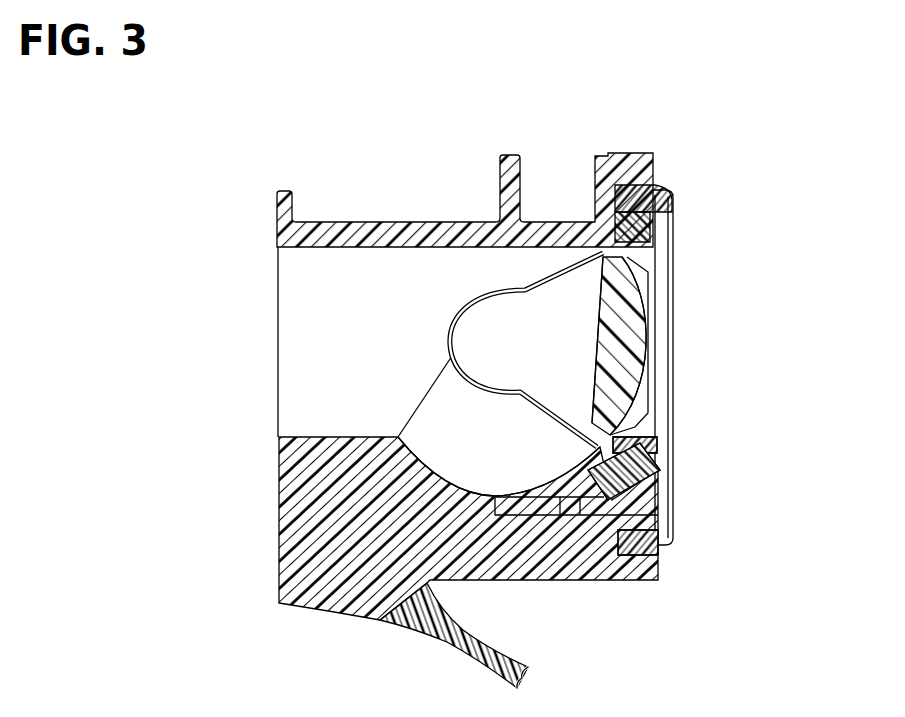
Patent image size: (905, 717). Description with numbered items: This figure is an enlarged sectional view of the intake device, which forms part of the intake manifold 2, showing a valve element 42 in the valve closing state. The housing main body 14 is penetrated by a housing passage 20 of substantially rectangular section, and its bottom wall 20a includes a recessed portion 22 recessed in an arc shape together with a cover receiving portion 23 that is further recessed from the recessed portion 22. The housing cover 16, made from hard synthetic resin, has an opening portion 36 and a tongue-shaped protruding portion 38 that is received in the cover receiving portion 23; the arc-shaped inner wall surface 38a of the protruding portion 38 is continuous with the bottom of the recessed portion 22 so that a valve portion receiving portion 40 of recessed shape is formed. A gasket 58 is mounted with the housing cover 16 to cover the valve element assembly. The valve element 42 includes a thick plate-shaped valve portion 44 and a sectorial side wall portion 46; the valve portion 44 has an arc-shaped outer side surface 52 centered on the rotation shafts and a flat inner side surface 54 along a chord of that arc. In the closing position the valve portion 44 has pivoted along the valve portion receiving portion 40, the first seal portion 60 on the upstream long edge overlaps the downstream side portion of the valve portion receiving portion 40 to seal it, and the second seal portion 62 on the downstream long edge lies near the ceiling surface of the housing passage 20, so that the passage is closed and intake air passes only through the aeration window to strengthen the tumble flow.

The intake manifold 2 is at (440, 146).
The housing main body 14 is at (330, 220).
The housing cover 16 is at (655, 222).
The housing passage 20 is at (290, 285).
The bottom wall 20a is at (312, 437).
The recessed portion 22 is at (442, 490).
The cover receiving portion 23 is at (567, 520).
The opening portion 36 is at (643, 430).
The protruding portion 38 is at (610, 520).
The inner wall surface 38a is at (533, 487).
The valve portion receiving portion 40 is at (444, 410).
The valve element 42 is at (495, 281).
The valve portion 44 is at (632, 322).
The side wall portion 46 is at (548, 303).
The outer side surface 52 is at (640, 405).
The inner side surface 54 is at (625, 370).
The gasket 58 is at (665, 190).
The first seal portion 60 is at (640, 475).
The second seal portion 62 is at (640, 255).